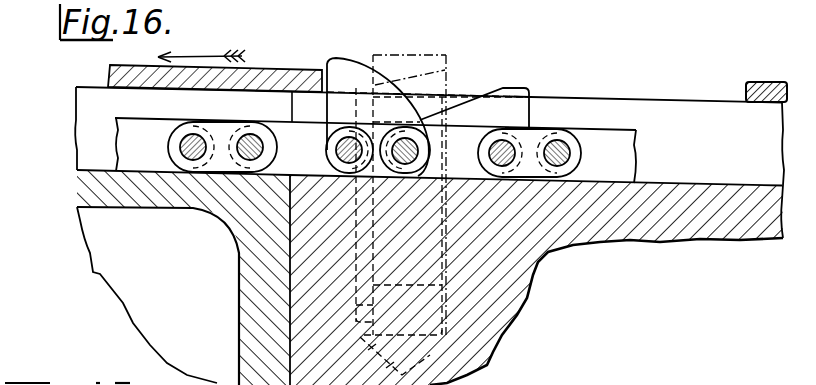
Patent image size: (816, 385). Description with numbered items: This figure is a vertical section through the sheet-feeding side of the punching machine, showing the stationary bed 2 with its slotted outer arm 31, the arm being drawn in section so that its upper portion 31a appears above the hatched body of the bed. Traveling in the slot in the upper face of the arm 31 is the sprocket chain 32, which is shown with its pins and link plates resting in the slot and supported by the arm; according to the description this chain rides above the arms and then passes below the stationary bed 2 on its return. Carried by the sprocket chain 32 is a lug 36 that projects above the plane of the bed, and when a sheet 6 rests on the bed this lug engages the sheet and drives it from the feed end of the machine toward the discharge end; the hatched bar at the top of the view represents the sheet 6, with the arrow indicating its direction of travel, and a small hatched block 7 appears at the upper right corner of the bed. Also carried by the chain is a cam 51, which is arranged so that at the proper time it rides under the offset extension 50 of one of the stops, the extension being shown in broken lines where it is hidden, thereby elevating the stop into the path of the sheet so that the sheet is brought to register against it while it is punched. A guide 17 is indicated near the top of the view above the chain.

The stationary bed 2 is at (573, 241).
The sheet 6 is at (275, 69).
The stop block 7 is at (772, 82).
The guide 17 is at (328, 5).
The outer arm 31 is at (143, 203).
The guide plate upper portion 31a is at (429, 162).
The sprocket chain 32 is at (152, 121).
The lug 36 is at (377, 117).
The offset extension 50 is at (433, 106).
The cam 51 is at (507, 90).